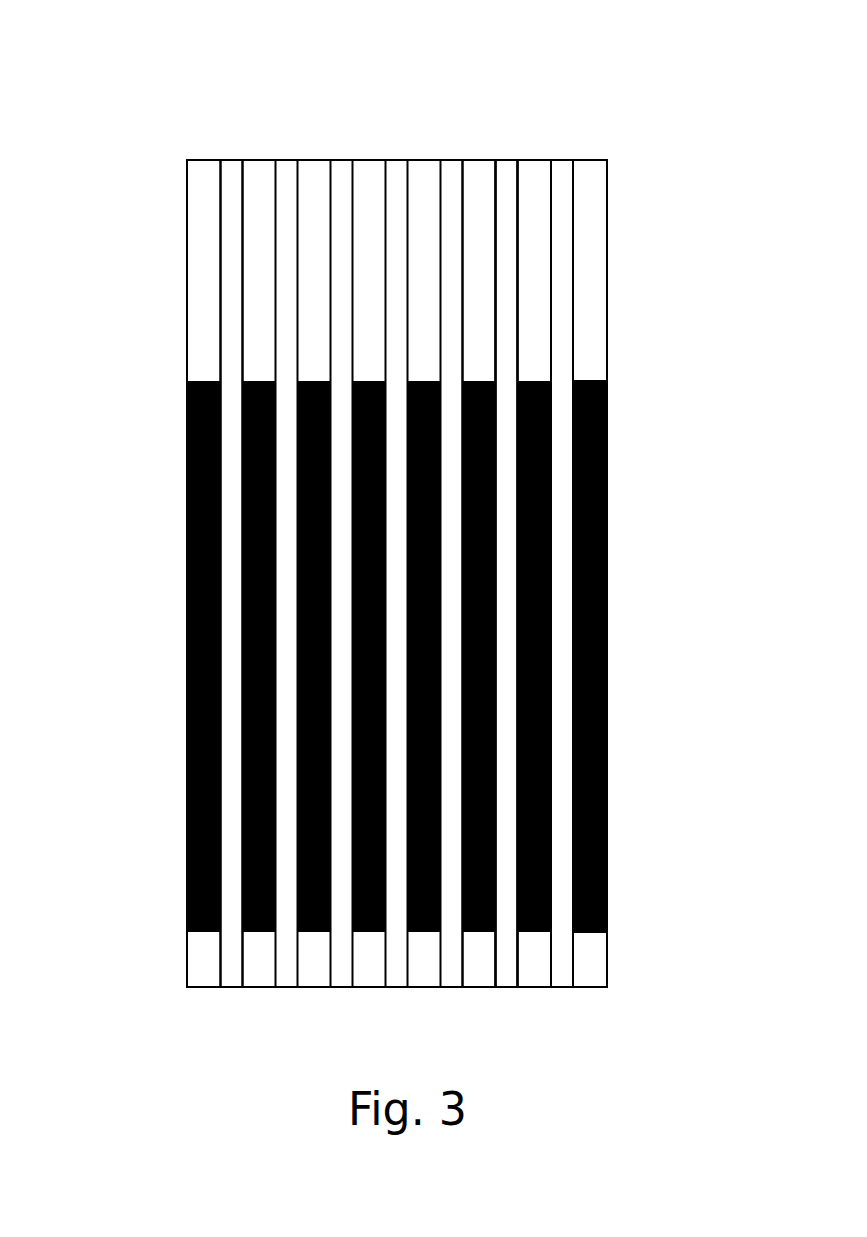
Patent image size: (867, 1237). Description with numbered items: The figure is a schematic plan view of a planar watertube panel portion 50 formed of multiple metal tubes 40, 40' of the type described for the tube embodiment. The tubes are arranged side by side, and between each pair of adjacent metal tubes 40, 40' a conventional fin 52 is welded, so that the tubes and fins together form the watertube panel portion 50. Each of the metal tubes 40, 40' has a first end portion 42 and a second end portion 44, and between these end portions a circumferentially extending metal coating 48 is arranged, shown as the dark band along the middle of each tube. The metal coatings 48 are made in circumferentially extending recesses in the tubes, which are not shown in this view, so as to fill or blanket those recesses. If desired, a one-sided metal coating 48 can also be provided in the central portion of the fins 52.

The metal tube 40 is at (455, 529).
The metal tube 40' is at (570, 527).
The fin 52 is at (510, 179).
The watertube panel portion 50 is at (230, 357).
The first end portion 42 is at (593, 315).
The metal coating 48 is at (607, 561).
The second end portion 44 is at (597, 952).